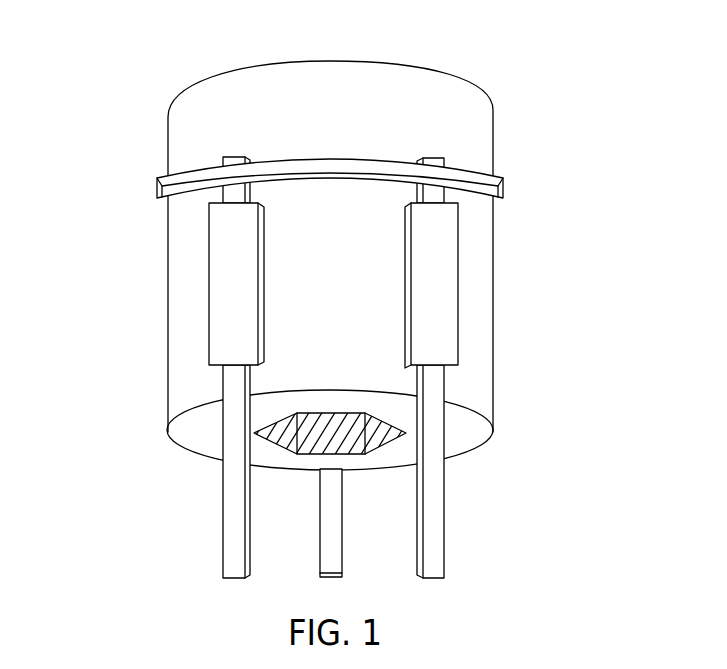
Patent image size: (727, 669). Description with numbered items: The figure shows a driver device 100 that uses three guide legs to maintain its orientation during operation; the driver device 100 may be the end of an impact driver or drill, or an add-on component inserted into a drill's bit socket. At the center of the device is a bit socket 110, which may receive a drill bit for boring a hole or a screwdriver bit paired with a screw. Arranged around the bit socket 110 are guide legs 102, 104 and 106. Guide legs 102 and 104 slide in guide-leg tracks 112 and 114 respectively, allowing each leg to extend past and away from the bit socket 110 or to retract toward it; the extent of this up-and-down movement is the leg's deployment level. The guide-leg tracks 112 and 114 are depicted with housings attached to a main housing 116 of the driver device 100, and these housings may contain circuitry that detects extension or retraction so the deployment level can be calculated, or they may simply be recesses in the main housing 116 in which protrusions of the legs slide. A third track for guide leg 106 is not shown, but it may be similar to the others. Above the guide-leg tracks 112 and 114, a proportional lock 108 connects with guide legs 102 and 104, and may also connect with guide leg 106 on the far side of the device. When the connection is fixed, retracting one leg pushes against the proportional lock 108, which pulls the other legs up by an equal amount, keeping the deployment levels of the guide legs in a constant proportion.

The driver device 100 is at (196, 76).
The guide leg 102 is at (432, 507).
The guide leg 104 is at (229, 505).
The guide leg 106 is at (330, 535).
The proportional lock 108 is at (465, 182).
The bit socket 110 is at (313, 425).
The guide-leg track 112 is at (447, 309).
The guide-leg track 114 is at (219, 312).
The main housing 116 is at (457, 97).